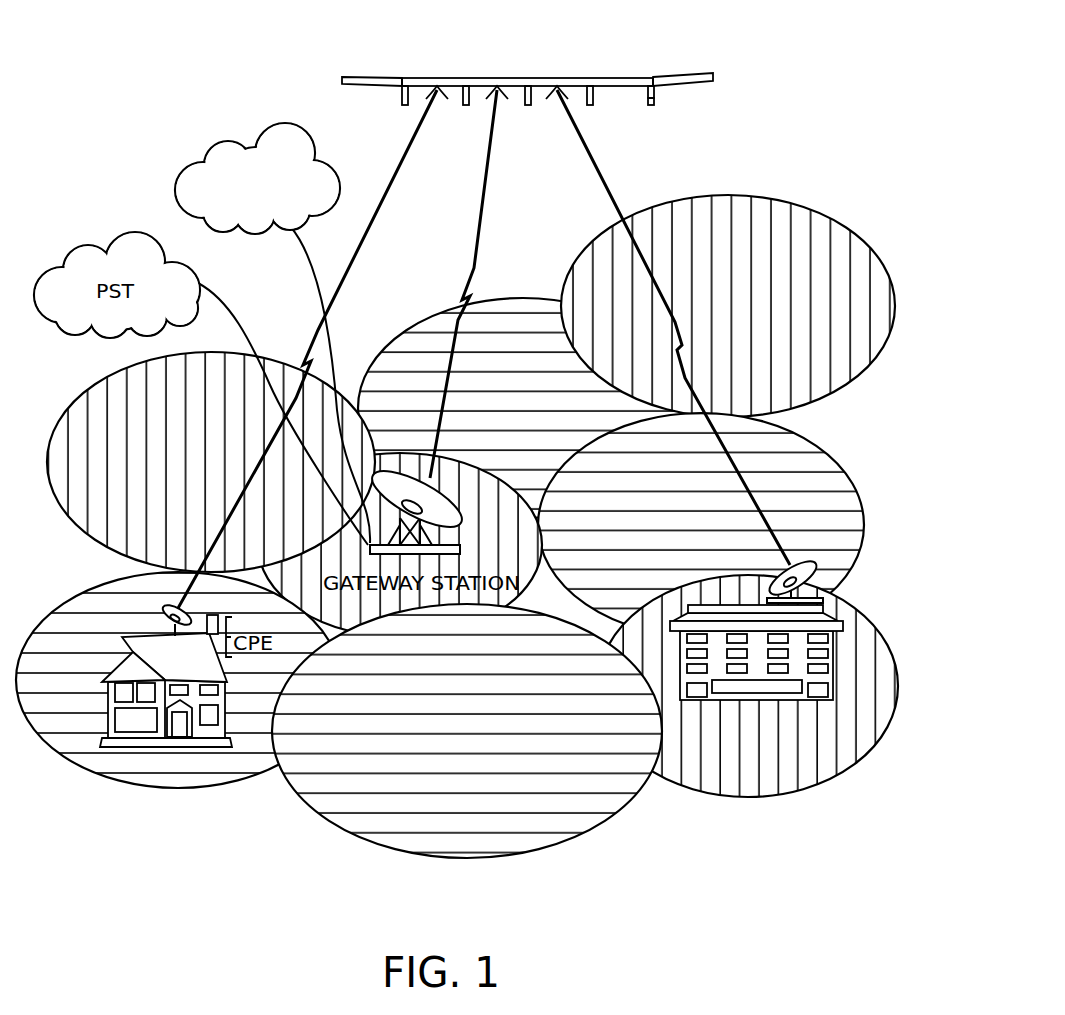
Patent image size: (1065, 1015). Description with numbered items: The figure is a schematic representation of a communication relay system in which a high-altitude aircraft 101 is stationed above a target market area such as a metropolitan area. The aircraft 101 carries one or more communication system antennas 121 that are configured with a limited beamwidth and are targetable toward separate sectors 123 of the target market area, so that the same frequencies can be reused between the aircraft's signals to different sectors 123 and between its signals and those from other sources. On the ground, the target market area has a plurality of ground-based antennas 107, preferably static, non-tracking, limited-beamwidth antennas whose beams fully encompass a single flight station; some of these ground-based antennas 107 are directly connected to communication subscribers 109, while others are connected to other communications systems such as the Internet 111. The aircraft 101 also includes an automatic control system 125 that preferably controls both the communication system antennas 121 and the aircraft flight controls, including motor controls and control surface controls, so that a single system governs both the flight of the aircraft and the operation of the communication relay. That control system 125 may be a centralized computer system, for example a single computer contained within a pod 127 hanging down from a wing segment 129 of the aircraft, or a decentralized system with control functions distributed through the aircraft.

The aircraft 101 is at (620, 77).
The ground-based antenna 107 is at (393, 483).
The communication subscriber 109 is at (173, 740).
The Internet 111 is at (230, 133).
The communication system antenna 121 is at (545, 80).
The sector 123 is at (120, 782).
The automatic control system 125 is at (658, 88).
The pod 127 is at (650, 103).
The wing segment 129 is at (683, 72).